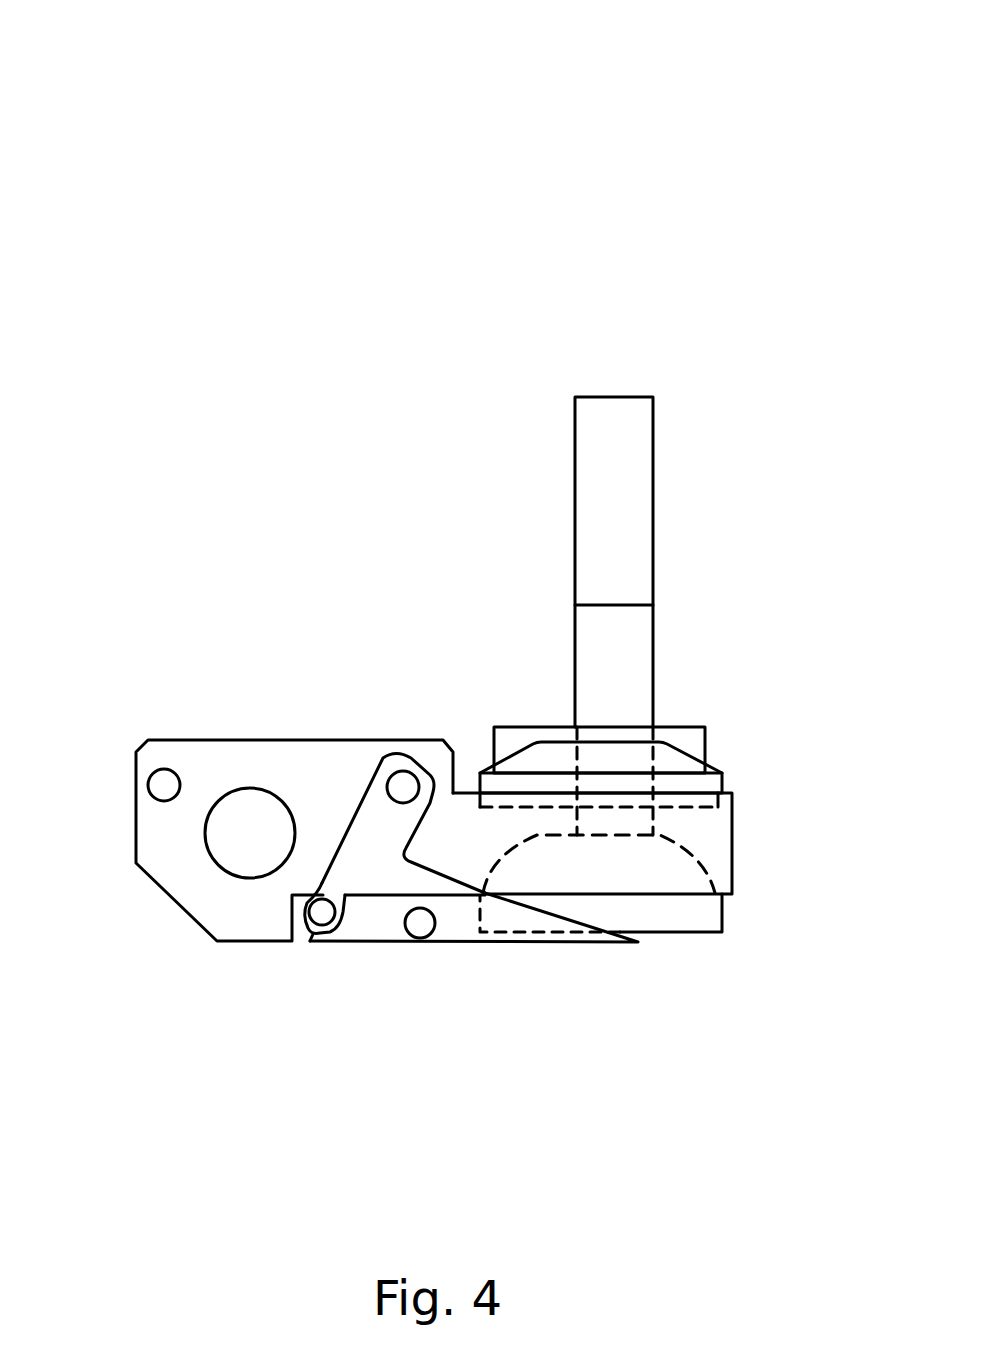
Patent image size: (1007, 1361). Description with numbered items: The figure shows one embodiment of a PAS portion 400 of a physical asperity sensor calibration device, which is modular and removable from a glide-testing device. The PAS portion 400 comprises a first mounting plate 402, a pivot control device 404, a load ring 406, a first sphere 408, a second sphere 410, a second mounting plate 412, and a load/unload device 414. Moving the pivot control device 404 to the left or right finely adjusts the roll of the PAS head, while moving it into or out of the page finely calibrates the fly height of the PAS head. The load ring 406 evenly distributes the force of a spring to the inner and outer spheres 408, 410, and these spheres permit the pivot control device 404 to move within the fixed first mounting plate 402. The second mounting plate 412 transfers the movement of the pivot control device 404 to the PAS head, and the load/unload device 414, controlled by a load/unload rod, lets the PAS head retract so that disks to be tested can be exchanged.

The PAS portion 400 is at (108, 114).
The first mounting plate 402 is at (218, 738).
The pivot control device 404 is at (655, 477).
The load ring 406 is at (672, 723).
The first sphere 408 is at (720, 765).
The second sphere 410 is at (733, 835).
The second mounting plate 412 is at (723, 917).
The load/unload device 414 is at (477, 942).